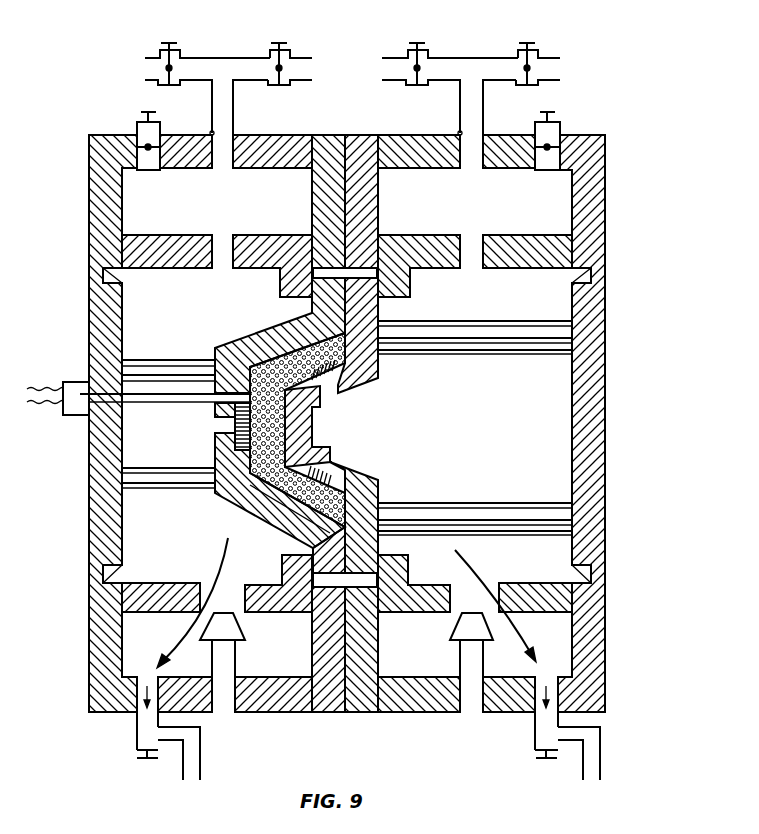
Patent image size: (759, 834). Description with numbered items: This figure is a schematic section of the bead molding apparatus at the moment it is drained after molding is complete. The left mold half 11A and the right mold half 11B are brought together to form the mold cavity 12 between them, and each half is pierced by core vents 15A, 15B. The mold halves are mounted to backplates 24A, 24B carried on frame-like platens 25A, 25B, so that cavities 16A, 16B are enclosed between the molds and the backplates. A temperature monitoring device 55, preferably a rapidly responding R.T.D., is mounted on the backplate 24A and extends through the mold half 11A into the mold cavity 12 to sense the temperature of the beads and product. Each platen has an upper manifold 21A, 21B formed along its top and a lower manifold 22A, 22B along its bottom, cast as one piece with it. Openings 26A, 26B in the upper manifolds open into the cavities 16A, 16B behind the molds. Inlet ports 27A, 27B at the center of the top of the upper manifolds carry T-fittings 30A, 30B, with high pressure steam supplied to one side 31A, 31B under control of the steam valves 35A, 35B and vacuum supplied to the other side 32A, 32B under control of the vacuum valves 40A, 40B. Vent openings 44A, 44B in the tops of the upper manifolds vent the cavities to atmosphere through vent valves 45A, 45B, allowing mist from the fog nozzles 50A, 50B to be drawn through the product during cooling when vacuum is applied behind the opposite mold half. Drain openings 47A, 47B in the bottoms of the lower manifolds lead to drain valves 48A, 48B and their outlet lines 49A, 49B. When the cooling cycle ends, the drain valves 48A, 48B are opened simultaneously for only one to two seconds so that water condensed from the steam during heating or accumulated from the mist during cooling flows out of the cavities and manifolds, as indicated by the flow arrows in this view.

The left mold half 11A is at (262, 336).
The right mold half 11B is at (372, 378).
The mold cavity 12 is at (246, 504).
The core vents 15A is at (222, 418).
The core vents 15B is at (340, 460).
The cavity 16A is at (190, 536).
The cavity 16B is at (505, 447).
The upper manifold 21A is at (316, 136).
The upper manifold 21B is at (395, 136).
The lower manifold 22A is at (277, 713).
The lower manifold 22B is at (400, 713).
The backplate 24A is at (92, 520).
The backplate 24B is at (623, 478).
The platen 25A is at (86, 665).
The platen 25B is at (610, 167).
The openings 26A is at (212, 272).
The openings 26B is at (478, 272).
The inlet port 27A is at (211, 132).
The inlet port 27B is at (459, 132).
The T-fitting 30A is at (226, 100).
The T-fitting 30B is at (478, 102).
The steam side of T-fitting 31A is at (195, 60).
The steam side of T-fitting 31B is at (446, 60).
The vacuum side of T-fitting 32A is at (238, 60).
The vacuum side of T-fitting 32B is at (493, 60).
The steam valve 35A is at (157, 55).
The steam valve 35B is at (405, 55).
The vacuum valve 40A is at (284, 55).
The vacuum valve 40B is at (532, 55).
The vent opening 44A is at (138, 172).
The vent opening 44B is at (545, 172).
The vent valve 45A is at (137, 124).
The vent valve 45B is at (556, 126).
The drain opening 47A is at (150, 678).
The drain opening 47B is at (545, 679).
The drain valve 48A is at (141, 739).
The drain valve 48B is at (538, 740).
The outlet conduit A 49A is at (192, 749).
The outlet conduit B 49B is at (597, 740).
The fog/mist nozzle 50A is at (242, 657).
The fog/mist nozzle 50B is at (460, 660).
The temperature monitoring device 55 is at (74, 418).